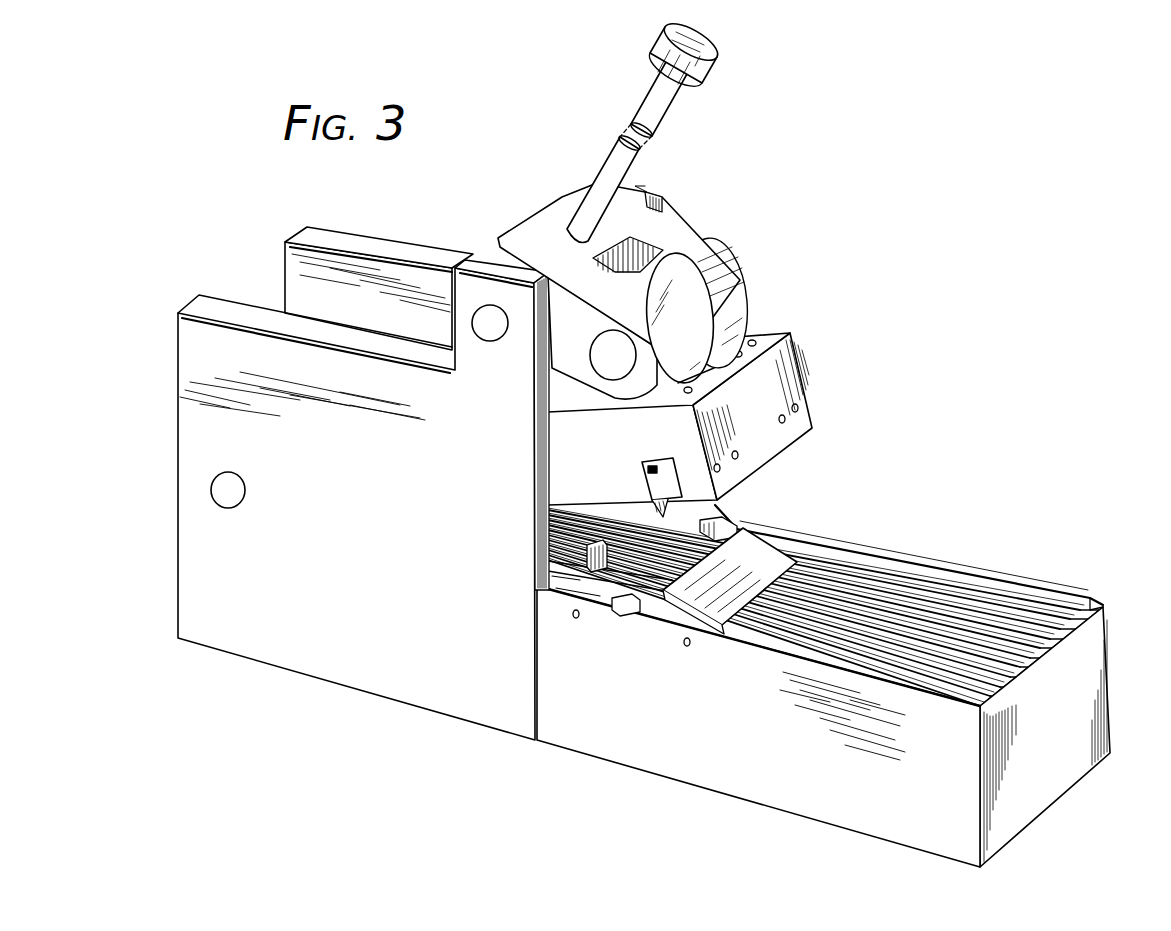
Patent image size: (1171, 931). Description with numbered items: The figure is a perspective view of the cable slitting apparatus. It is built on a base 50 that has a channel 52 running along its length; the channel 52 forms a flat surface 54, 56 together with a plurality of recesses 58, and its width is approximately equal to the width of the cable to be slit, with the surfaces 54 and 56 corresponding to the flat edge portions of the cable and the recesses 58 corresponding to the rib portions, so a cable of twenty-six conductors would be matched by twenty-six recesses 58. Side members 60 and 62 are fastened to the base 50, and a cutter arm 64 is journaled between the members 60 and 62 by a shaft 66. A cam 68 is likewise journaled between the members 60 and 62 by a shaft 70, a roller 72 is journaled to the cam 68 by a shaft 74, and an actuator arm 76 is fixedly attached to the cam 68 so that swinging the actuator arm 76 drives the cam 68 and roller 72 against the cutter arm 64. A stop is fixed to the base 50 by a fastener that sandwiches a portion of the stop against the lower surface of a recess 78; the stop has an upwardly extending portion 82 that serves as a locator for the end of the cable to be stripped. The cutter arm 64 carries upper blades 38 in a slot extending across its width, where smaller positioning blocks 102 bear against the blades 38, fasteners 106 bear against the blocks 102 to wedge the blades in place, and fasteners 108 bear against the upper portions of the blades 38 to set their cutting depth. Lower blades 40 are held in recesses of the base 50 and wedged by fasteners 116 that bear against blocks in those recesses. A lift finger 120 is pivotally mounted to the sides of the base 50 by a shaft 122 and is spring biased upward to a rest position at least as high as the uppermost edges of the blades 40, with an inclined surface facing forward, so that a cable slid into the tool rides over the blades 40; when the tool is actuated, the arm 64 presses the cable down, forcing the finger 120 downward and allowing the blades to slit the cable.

The blades 38 is at (647, 497).
The blades 40 is at (735, 508).
The base 50 is at (848, 686).
The channel 52 is at (1023, 607).
The flat surface 54 is at (1045, 737).
The flat surface 56 is at (1092, 618).
The recesses 58 is at (1043, 668).
The side member 60 is at (337, 483).
The side member 62 is at (395, 241).
The cutter arm 64 is at (710, 404).
The shaft 66 is at (210, 488).
The cam 68 is at (619, 291).
The shaft 70 is at (491, 305).
The roller 72 is at (713, 302).
The shaft 74 is at (597, 338).
The actuator arm 76 is at (657, 124).
The recess 78 is at (570, 600).
The upwardly extending portion 82 is at (550, 534).
The positioning blocks 102 is at (641, 474).
The fasteners 106 is at (798, 408).
The fasteners 108 is at (757, 339).
The fasteners 116 is at (578, 619).
The lift finger 120 is at (748, 572).
The shaft 122 is at (688, 648).